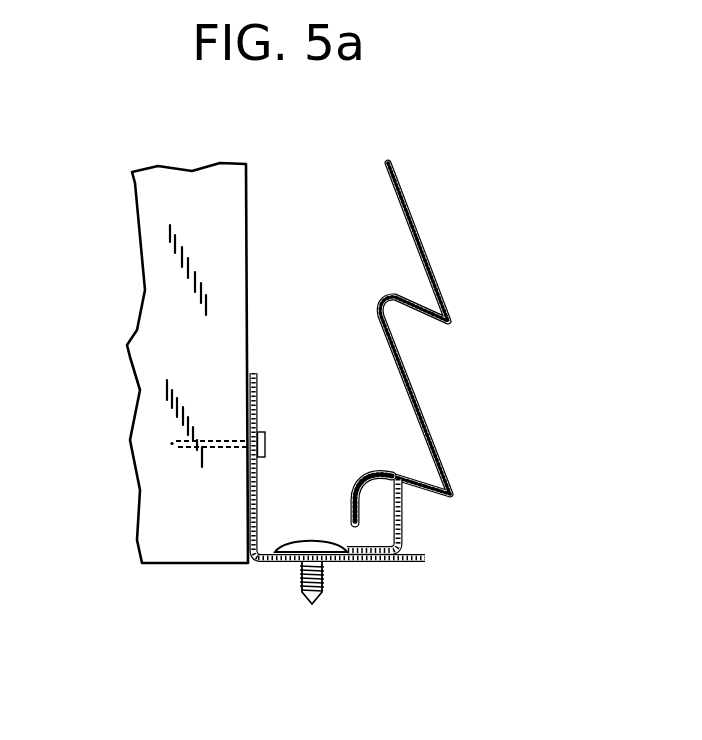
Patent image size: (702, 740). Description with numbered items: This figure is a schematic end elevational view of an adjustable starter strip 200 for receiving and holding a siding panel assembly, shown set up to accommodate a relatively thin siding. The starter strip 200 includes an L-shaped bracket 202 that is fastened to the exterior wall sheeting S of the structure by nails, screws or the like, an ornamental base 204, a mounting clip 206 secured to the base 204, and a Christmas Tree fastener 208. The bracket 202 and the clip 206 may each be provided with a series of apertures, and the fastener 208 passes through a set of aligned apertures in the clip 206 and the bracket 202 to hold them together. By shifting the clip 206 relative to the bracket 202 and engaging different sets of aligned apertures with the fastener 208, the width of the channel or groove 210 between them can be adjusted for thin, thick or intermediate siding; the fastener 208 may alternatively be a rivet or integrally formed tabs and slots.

The starter strip 200 is at (452, 220).
The L-shaped bracket 202 is at (258, 400).
The ornamental base 204 is at (143, 344).
The mounting clip 206 is at (377, 563).
The Christmas Tree fastener 208 is at (311, 537).
The channel or groove 210 is at (303, 205).
The exterior wall sheeting S is at (413, 381).